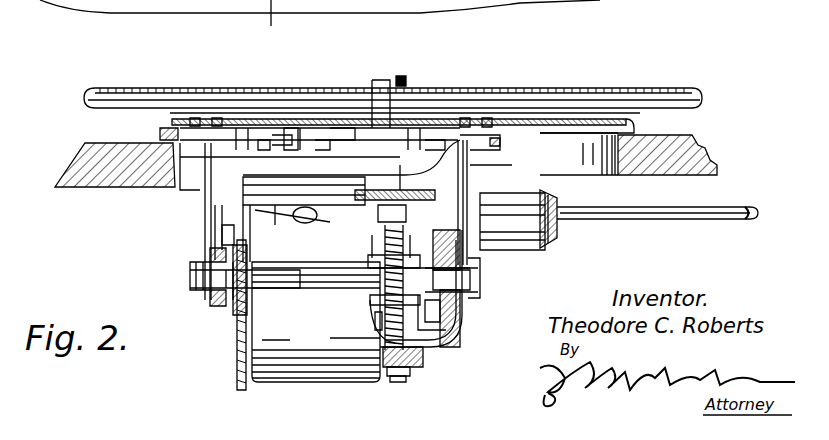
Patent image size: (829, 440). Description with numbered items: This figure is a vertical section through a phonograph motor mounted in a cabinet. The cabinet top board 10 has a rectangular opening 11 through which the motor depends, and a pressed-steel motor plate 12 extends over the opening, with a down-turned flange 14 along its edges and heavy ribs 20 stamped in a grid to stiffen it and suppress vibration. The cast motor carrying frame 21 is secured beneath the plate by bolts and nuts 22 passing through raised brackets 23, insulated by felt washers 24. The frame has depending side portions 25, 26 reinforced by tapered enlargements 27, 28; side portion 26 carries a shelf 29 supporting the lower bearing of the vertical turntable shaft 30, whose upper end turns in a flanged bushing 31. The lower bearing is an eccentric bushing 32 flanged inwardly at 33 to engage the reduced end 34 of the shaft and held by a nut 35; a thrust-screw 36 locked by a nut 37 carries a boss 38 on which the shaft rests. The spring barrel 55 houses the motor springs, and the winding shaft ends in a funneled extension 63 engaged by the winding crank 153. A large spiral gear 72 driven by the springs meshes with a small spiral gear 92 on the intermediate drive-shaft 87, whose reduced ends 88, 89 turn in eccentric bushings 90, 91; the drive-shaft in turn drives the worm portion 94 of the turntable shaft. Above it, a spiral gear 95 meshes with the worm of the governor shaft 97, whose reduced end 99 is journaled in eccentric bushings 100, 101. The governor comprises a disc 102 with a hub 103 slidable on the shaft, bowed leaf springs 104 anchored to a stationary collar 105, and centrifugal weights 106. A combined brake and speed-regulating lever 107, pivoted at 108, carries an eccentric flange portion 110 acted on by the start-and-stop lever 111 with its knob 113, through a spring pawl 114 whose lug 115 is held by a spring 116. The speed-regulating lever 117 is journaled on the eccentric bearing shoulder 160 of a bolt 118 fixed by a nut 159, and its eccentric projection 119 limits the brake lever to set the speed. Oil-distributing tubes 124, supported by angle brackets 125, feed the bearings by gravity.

The top board 10 is at (706, 165).
The rectangular opening 11 is at (622, 163).
The motor plate 12 is at (632, 121).
The down-turned right angle flange 14 is at (642, 129).
The ribs 20 is at (562, 118).
The motor carrying frame 21 is at (196, 118).
The bolts and nuts 22 is at (216, 118).
The raised brackets 23 is at (200, 182).
The felt washers 24 is at (158, 136).
The depending side portion 25 is at (222, 310).
The depending side portion 26 is at (472, 276).
The tapered enlargement 27 is at (202, 165).
The tapered enlargement 28 is at (505, 168).
The shelf 29 is at (380, 350).
The turntable shaft 30 is at (402, 80).
The flanged bushing 31 is at (417, 135).
The bushing 32 is at (435, 350).
The inward flange 33 is at (418, 336).
The reduced end 34 is at (442, 322).
The nut 35 is at (640, 336).
The thrust-screw 36 is at (408, 358).
The nut 37 is at (400, 370).
The bearing head 38 is at (422, 352).
The spring barrel 55 is at (246, 375).
The funneled extension 63 is at (558, 206).
The spiral gear 72 is at (236, 362).
The intermediate drive-shaft 87 is at (300, 292).
The reduced end 88 is at (513, 278).
The reduced end 89 is at (214, 298).
The eccentric bushing 90 is at (472, 286).
The eccentric bushing 91 is at (190, 292).
The spiral gear 92 is at (240, 318).
The worm portion 94 is at (387, 262).
The spiral gear 95 is at (478, 225).
The governor shaft 97 is at (385, 178).
The reduced end 99 is at (252, 212).
The eccentric bushing 100 is at (475, 262).
The eccentric bushing 101 is at (232, 222).
The disc 102 is at (218, 248).
The hub 103 is at (278, 215).
The bowed leaf springs 104 is at (388, 248).
The stationary collar 105 is at (392, 235).
The centrifugal weights 106 is at (308, 226).
The combined brake and speed-regulating lever 107 is at (240, 118).
The pivot 108 is at (252, 118).
The eccentric flange portion 110 is at (262, 140).
The start-and-stop lever 111 is at (342, 121).
The knob 113 is at (290, 100).
The spring pawl 114 is at (312, 152).
The lug 115 is at (300, 130).
The spring 116 is at (322, 140).
The speed-regulating lever 117 is at (378, 128).
The bolt 118 is at (430, 140).
The eccentric projection 119 is at (282, 128).
The oil-distributing tubes 124 is at (378, 290).
The angle brackets 125 is at (200, 272).
The winding crank 153 is at (745, 211).
The nut 159 is at (488, 120).
The eccentric bearing shoulder 160 is at (470, 125).